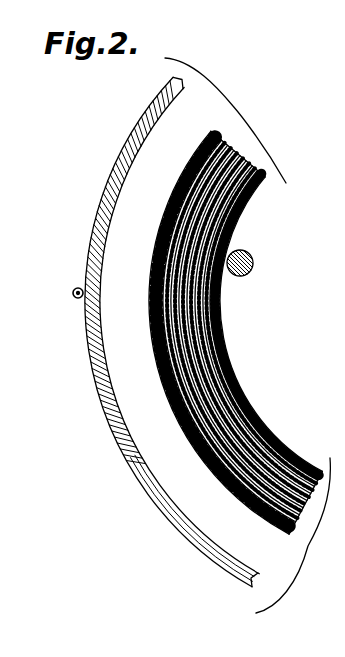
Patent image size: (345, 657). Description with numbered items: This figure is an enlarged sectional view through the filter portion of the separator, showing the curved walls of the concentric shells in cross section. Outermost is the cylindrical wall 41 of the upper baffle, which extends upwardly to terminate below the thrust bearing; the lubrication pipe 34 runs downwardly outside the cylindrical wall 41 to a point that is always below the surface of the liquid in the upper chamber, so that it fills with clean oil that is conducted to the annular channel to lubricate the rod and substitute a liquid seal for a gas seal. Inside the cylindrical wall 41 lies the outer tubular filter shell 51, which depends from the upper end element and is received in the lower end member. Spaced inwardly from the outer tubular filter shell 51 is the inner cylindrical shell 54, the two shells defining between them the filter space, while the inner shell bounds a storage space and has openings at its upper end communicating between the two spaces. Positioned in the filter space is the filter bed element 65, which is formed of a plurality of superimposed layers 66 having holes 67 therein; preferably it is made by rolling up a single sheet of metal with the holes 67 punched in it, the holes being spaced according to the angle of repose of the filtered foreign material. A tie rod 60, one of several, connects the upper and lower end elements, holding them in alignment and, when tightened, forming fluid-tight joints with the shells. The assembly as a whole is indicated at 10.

The assembly 10 is at (251, 315).
The cylindrical wall 41 is at (124, 128).
The lubrication pipe 34 is at (68, 290).
The outer tubular filter shell 51 is at (148, 238).
The filter bed element 65 is at (232, 148).
The superimposed layers 66 is at (222, 184).
The holes 67 is at (215, 212).
The inner cylindrical shell 54 is at (216, 331).
The tie rods 60 is at (245, 256).